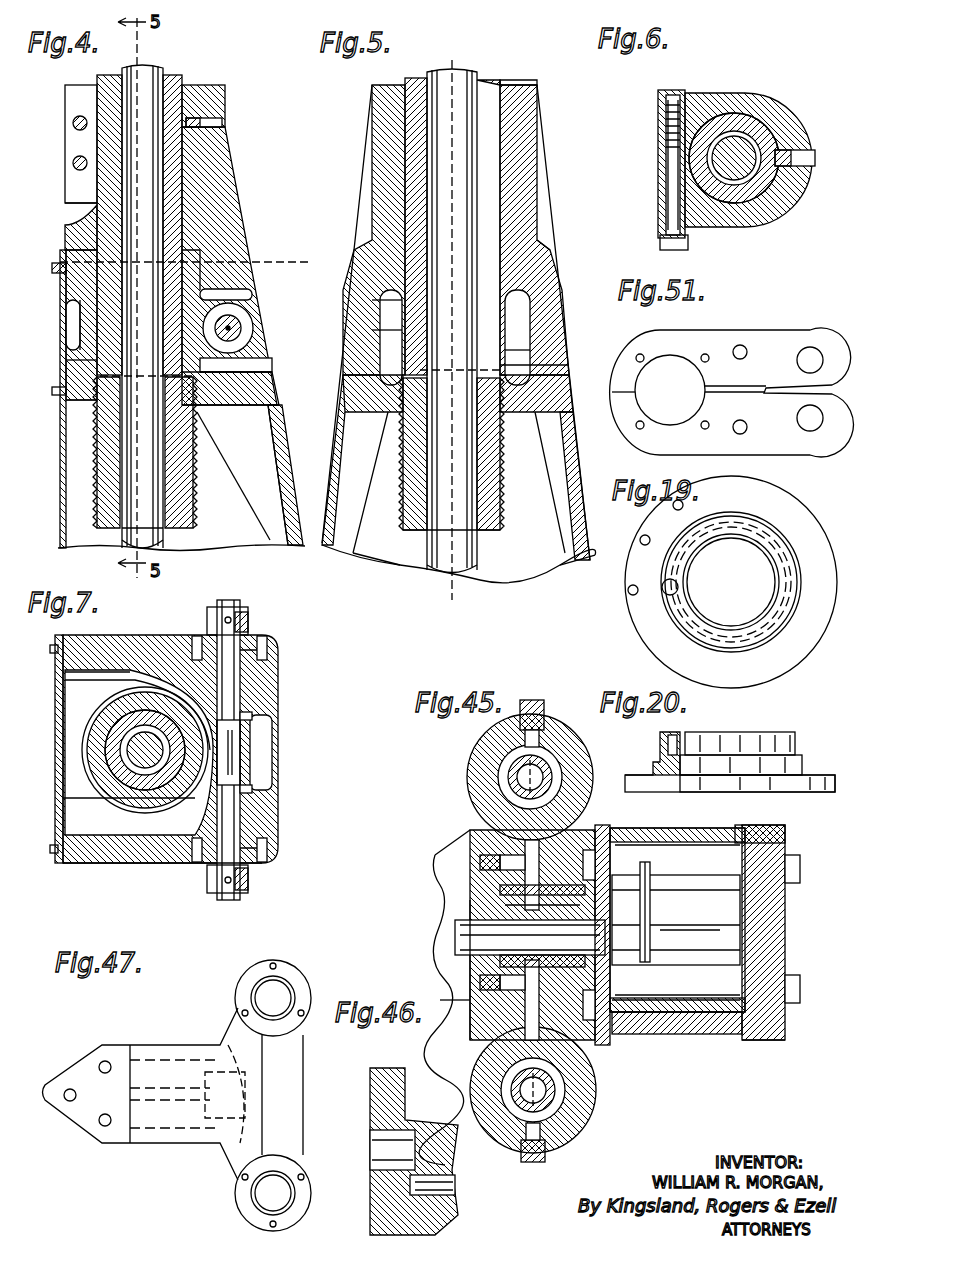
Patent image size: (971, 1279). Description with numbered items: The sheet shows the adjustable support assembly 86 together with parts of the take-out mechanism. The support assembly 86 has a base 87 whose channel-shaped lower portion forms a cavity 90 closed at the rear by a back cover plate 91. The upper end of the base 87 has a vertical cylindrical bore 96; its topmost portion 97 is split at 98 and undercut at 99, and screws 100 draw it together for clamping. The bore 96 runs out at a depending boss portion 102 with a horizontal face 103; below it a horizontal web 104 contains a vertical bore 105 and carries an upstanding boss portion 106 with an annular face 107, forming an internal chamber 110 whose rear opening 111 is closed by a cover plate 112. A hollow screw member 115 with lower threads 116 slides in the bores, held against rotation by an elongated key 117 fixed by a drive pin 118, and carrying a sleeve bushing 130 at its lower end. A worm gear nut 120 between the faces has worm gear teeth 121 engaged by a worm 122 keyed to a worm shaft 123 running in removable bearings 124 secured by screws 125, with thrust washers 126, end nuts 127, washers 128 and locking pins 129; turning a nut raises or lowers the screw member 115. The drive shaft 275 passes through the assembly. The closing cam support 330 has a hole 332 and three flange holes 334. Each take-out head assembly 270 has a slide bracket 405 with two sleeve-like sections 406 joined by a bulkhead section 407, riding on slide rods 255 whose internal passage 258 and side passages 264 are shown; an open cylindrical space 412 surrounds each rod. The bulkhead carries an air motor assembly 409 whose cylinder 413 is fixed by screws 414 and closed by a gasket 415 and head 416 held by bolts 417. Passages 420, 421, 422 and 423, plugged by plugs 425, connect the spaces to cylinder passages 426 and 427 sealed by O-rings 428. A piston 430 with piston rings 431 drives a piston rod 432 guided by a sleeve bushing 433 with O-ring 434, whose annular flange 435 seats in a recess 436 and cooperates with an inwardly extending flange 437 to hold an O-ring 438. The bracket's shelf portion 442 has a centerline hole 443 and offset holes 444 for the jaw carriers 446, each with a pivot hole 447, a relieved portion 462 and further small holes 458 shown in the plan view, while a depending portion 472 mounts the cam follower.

In FIG. 4, the support assembly 86 is at (249, 171).
In FIG. 5, the support assembly 86 is at (558, 188).
In FIG. 6, the support assembly 86 is at (788, 71).
In FIG. 7, the support assembly 86 is at (290, 701).
In FIG. 4, the base 87 is at (293, 548).
In FIG. 5, the base 87 is at (575, 548).
In FIG. 7, the base 87 is at (95, 866).
In FIG. 4, the cavity 90 is at (225, 462).
In FIG. 5, the cavity 90 is at (410, 550).
In FIG. 4, the back cover plate 91 is at (60, 478).
In FIG. 4, the vertical cylindrical bore 96 is at (185, 255).
In FIG. 5, the vertical cylindrical bore 96 is at (505, 142).
In FIG. 6, the vertical cylindrical bore 96 is at (750, 100).
In FIG. 4, the topmost portion 97 is at (210, 85).
In FIG. 5, the topmost portion 97 is at (515, 80).
In FIG. 6, the topmost portion 97 is at (712, 95).
In FIG. 4, the split 98 is at (72, 165).
In FIG. 6, the split 98 is at (660, 163).
In FIG. 4, the undercut 99 is at (72, 190).
In FIG. 4, the screws 100 is at (73, 123).
In FIG. 6, the screws 100 is at (670, 198).
In FIG. 4, the internal depending boss portion 102 is at (200, 268).
In FIG. 5, the internal depending boss portion 102 is at (545, 262).
In FIG. 4, the horizontal face 103 is at (70, 318).
In FIG. 5, the horizontal face 103 is at (375, 308).
In FIG. 4, the horizontal web 104 is at (252, 392).
In FIG. 5, the horizontal web 104 is at (520, 392).
In FIG. 7, the horizontal web 104 is at (145, 828).
In FIG. 4, the vertical bore 105 is at (72, 400).
In FIG. 5, the vertical bore 105 is at (535, 368).
In FIG. 4, the upstanding boss portion 106 is at (262, 370).
In FIG. 5, the upstanding boss portion 106 is at (380, 415).
In FIG. 4, the horizontal annular face 107 is at (250, 362).
In FIG. 5, the horizontal annular face 107 is at (530, 330).
In FIG. 4, the internal chamber 110 is at (245, 292).
In FIG. 5, the internal chamber 110 is at (535, 305).
In FIG. 7, the internal chamber 110 is at (140, 670).
In FIG. 4, the rear opening 111 is at (60, 300).
In FIG. 7, the rear opening 111 is at (75, 684).
In FIG. 4, the cover plate 112 is at (55, 268).
In FIG. 7, the cover plate 112 is at (58, 715).
In FIG. 4, the hollow screw member 115 is at (110, 100).
In FIG. 5, the hollow screw member 115 is at (490, 110).
In FIG. 6, the hollow screw member 115 is at (740, 200).
In FIG. 7, the hollow screw member 115 is at (130, 758).
In FIG. 4, the threads 116 is at (198, 480).
In FIG. 5, the threads 116 is at (505, 495).
In FIG. 7, the threads 116 is at (95, 790).
In FIG. 4, the elongated key 117 is at (200, 105).
In FIG. 6, the elongated key 117 is at (790, 150).
In FIG. 4, the drive pin 118 is at (215, 122).
In FIG. 6, the drive pin 118 is at (800, 168).
In FIG. 4, the worm gear nut 120 is at (82, 365).
In FIG. 5, the worm gear nut 120 is at (530, 300).
In FIG. 7, the worm gear nut 120 is at (125, 680).
In FIG. 4, the peripheral worm gear teeth 121 is at (80, 345).
In FIG. 5, the peripheral worm gear teeth 121 is at (372, 330).
In FIG. 7, the peripheral worm gear teeth 121 is at (125, 810).
In FIG. 4, the worm 122 is at (250, 318).
In FIG. 7, the worm 122 is at (272, 742).
In FIG. 4, the worm shaft 123 is at (242, 328).
In FIG. 7, the worm shaft 123 is at (230, 692).
In FIG. 7, the removable bearings 124 is at (245, 665).
In FIG. 7, the screws 125 is at (197, 636).
In FIG. 7, the thrust washers 126 is at (252, 716).
In FIG. 7, the nut 127 is at (240, 612).
In FIG. 7, the washers 128 is at (248, 620).
In FIG. 7, the pins 129 is at (228, 616).
In FIG. 4, the sleeve bushing 130 is at (165, 520).
In FIG. 5, the sleeve bushing 130 is at (478, 540).
In FIG. 45, the slide rods 255 is at (516, 778).
In FIG. 45, the internal passage 258 is at (512, 760).
In FIG. 45, the passages 264 is at (560, 760).
In FIG. 45, the take-out head assembly 270 is at (427, 874).
In FIG. 4, the drive shaft 275 is at (158, 68).
In FIG. 5, the drive shaft 275 is at (462, 70).
In FIG. 6, the drive shaft 275 is at (732, 135).
In FIG. 7, the drive shaft 275 is at (135, 752).
In FIG. 19, the closing cam support 330 is at (635, 636).
In FIG. 20, the closing cam support 330 is at (770, 732).
In FIG. 19, the hole 332 is at (662, 585).
In FIG. 20, the hole 332 is at (675, 735).
In FIG. 19, the holes 334 is at (682, 500).
In FIG. 20, the holes 334 is at (640, 775).
In FIG. 45, the slide bracket 405 is at (470, 800).
In FIG. 47, the slide bracket 405 is at (201, 1030).
In FIG. 45, the sleeve-like sections 406 is at (560, 730).
In FIG. 47, the sleeve-like sections 406 is at (302, 982).
In FIG. 45, the bulkhead section 407 is at (520, 990).
In FIG. 47, the bulkhead section 407 is at (292, 1095).
In FIG. 45, the air motor assembly 409 is at (734, 1049).
In FIG. 45, the open cylindrical space 412 is at (500, 788).
In FIG. 45, the cylinder 413 is at (705, 850).
In FIG. 46, the cylinder 413 is at (445, 1190).
In FIG. 45, the screws 414 is at (500, 862).
In FIG. 45, the gasket 415 is at (775, 838).
In FIG. 45, the head 416 is at (760, 935).
In FIG. 45, the bolts 417 is at (800, 866).
In FIG. 45, the passage 420 is at (525, 860).
In FIG. 45, the passage 421 is at (492, 870).
In FIG. 45, the passage 422 is at (540, 1040).
In FIG. 45, the passage 423 is at (495, 984).
In FIG. 45, the plugs 425 is at (540, 690).
In FIG. 45, the fluid passage 426 is at (610, 860).
In FIG. 46, the fluid passage 426 is at (418, 1118).
In FIG. 45, the passage 427 is at (700, 1035).
In FIG. 45, the O-rings 428 is at (590, 848).
In FIG. 45, the piston 430 is at (665, 842).
In FIG. 45, the piston rings 431 is at (640, 915).
In FIG. 45, the piston rod 432 is at (465, 940).
In FIG. 45, the sleeve bushing 433 is at (505, 960).
In FIG. 45, the O-ring 434 is at (520, 910).
In FIG. 45, the external annular flange 435 is at (500, 890).
In FIG. 45, the recess 436 is at (635, 1015).
In FIG. 45, the inwardly extending flange 437 is at (650, 890).
In FIG. 45, the O-ring 438 is at (665, 960).
In FIG. 45, the horizontal shelf portion 442 is at (440, 962).
In FIG. 47, the horizontal shelf portion 442 is at (170, 1122).
In FIG. 47, the hole 443 is at (68, 1102).
In FIG. 47, the holes 444 is at (105, 1060).
In FIG. 51, the jaw carriers 446 is at (770, 335).
In FIG. 51, the pivot hole 447 is at (818, 342).
In FIG. 51, the hole 458 is at (735, 346).
In FIG. 51, the relieved portion 462 is at (752, 372).
In FIG. 47, the depending portion 472 is at (240, 1090).